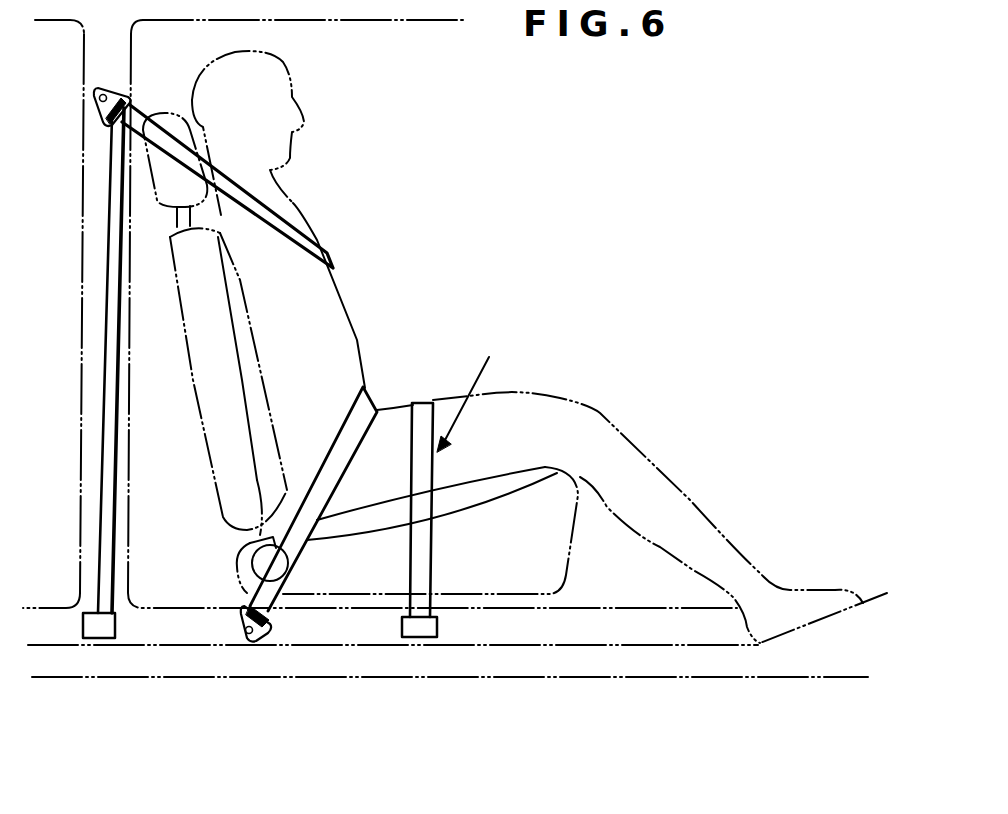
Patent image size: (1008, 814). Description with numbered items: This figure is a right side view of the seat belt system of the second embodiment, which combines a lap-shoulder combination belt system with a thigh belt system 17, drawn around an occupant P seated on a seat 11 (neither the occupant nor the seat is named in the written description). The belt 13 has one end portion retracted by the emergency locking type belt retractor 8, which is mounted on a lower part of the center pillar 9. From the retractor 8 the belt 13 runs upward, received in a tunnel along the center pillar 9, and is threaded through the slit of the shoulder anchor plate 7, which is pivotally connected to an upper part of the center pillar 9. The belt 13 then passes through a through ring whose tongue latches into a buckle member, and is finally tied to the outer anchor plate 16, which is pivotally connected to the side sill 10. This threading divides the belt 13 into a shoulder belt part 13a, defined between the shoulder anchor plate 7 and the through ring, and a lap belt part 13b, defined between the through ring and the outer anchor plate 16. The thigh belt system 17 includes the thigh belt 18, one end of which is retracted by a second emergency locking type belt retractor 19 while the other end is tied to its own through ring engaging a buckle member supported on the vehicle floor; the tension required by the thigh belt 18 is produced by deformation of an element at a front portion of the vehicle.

The shoulder anchor plate 7 is at (110, 92).
The emergency locking type belt retractor 8 is at (85, 642).
The center pillar 9 is at (88, 391).
The side sill 10 is at (514, 681).
The seat 11 is at (565, 565).
The belt 13 is at (108, 298).
The shoulder belt part 13a is at (334, 258).
The lap belt part 13b is at (367, 388).
The outer anchor plate 16 is at (253, 644).
The thigh belt system 17 is at (479, 401).
The thigh belt 18 is at (426, 403).
The emergency locking type belt retractor 19 is at (418, 641).
The passenger (occupant) P is at (286, 202).